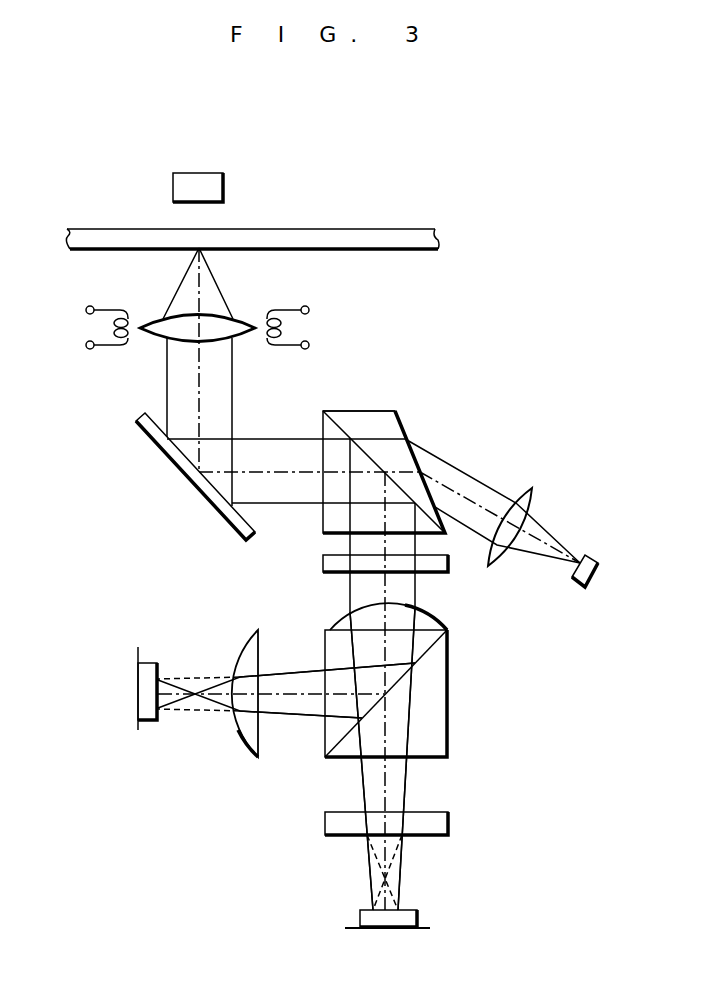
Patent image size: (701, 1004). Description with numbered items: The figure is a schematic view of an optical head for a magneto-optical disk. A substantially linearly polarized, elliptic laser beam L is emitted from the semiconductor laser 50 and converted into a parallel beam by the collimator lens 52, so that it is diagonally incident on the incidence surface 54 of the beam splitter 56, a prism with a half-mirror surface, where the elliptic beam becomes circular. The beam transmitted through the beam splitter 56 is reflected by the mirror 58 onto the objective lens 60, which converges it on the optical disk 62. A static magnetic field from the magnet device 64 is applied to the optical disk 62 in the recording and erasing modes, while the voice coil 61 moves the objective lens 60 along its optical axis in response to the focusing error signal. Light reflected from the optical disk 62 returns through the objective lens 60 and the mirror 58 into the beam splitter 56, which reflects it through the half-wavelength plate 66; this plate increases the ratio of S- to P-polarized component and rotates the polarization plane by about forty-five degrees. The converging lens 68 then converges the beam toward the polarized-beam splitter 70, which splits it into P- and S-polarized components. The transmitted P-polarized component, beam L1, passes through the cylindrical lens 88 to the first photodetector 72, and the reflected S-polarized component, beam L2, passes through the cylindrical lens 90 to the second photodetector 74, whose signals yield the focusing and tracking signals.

The semiconductor laser 50 is at (590, 553).
The collimator lens 52 is at (535, 492).
The incidence surface 54 is at (398, 413).
The beam splitter 56 is at (357, 412).
The mirror 58 is at (157, 450).
The objective lens 60 is at (243, 322).
The voice coil 61 is at (84, 298).
The optical disk 62 is at (337, 228).
The magnet device 64 is at (225, 185).
The half-wavelength plate 66 is at (328, 560).
The converging lens 68 is at (430, 612).
The polarized-beam splitter 70 is at (450, 680).
The first photodetector 72 is at (418, 917).
The second photodetector 74 is at (146, 718).
The cylindrical lens 88 is at (452, 823).
The cylindrical lens 90 is at (253, 743).
The laser beam L is at (467, 472).
The light beam L1 is at (407, 788).
The light beam L2 is at (292, 670).